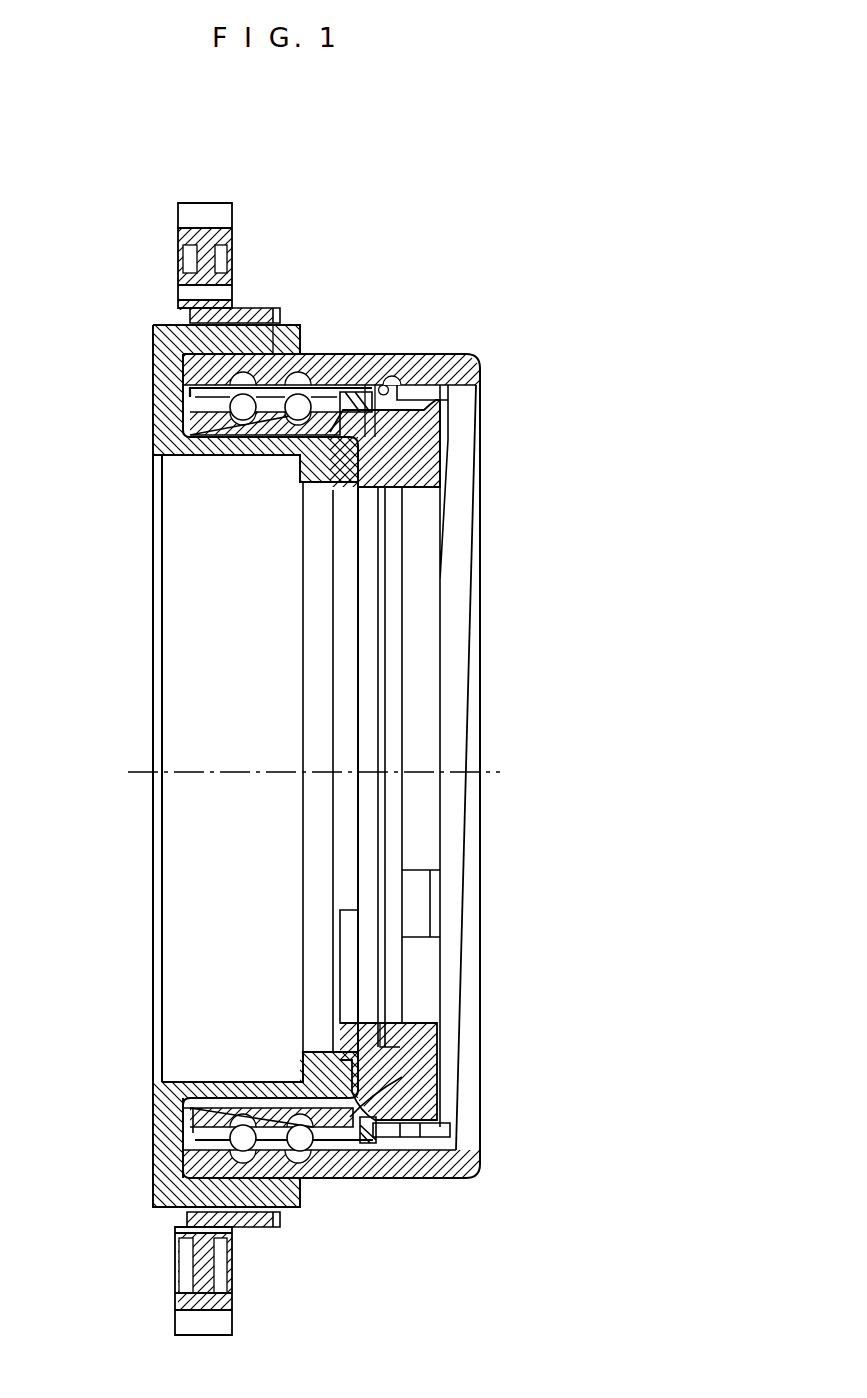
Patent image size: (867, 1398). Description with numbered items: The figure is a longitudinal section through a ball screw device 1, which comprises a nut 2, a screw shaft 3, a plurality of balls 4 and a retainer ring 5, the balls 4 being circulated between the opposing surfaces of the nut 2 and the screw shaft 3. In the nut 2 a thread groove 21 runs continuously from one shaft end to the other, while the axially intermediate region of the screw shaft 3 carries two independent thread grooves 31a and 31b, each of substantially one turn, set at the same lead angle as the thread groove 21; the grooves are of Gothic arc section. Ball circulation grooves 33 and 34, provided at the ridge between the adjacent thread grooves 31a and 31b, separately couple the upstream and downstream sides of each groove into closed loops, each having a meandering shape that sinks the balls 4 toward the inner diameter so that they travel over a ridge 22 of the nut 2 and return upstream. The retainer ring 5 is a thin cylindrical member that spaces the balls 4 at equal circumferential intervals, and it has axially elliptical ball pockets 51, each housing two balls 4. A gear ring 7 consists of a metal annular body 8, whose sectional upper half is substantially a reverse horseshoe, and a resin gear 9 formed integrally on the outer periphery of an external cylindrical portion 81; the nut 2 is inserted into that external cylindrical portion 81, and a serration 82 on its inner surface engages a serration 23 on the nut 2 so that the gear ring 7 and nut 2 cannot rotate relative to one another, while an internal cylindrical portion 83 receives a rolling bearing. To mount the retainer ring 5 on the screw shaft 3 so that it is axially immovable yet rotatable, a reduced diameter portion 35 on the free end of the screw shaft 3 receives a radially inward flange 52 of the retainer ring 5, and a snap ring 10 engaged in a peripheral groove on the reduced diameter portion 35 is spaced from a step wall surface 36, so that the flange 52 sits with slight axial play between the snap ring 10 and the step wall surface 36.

The ball screw device 1 is at (458, 267).
The nut 2 is at (440, 353).
The screw shaft 3 is at (430, 465).
The balls 4 is at (246, 415).
The retainer ring 5 is at (247, 410).
The gear ring 7 is at (70, 218).
The annular body 8 is at (153, 332).
The gear 9 is at (178, 252).
The snap ring 10 is at (455, 1137).
The thread groove 21 is at (372, 378).
The ridge 22 is at (305, 357).
The serration 23 is at (178, 1150).
The thread groove 31a is at (241, 1128).
The thread groove 31b is at (288, 1125).
The ball circulation groove 33 is at (162, 455).
The ball circulation groove 34 is at (297, 420).
The reduced diameter portion 35 is at (413, 401).
The step wall surface 36 is at (372, 1143).
The ball pockets 51 is at (327, 400).
The flange 52 is at (402, 1077).
The external cylindrical portion 81 is at (285, 338).
The serration 82 is at (213, 353).
The internal cylindrical portion 83 is at (283, 433).